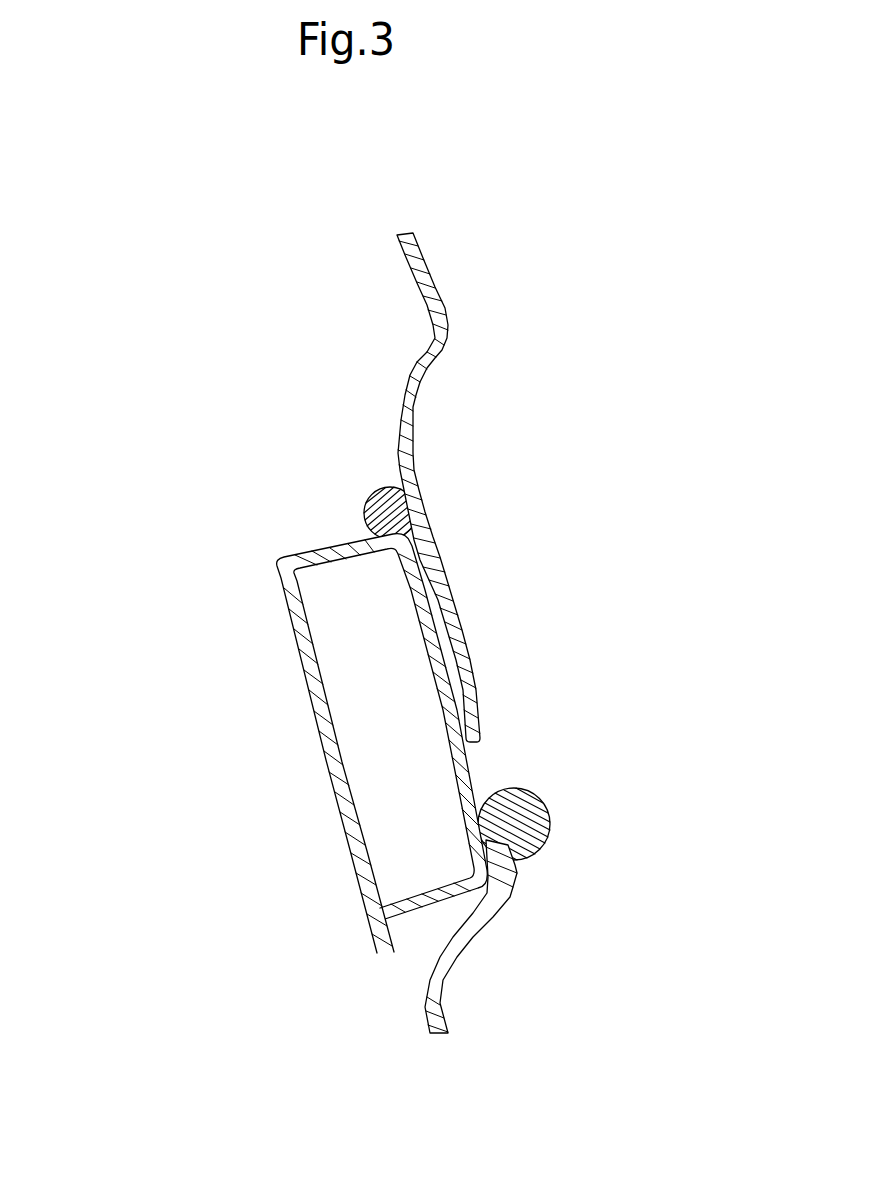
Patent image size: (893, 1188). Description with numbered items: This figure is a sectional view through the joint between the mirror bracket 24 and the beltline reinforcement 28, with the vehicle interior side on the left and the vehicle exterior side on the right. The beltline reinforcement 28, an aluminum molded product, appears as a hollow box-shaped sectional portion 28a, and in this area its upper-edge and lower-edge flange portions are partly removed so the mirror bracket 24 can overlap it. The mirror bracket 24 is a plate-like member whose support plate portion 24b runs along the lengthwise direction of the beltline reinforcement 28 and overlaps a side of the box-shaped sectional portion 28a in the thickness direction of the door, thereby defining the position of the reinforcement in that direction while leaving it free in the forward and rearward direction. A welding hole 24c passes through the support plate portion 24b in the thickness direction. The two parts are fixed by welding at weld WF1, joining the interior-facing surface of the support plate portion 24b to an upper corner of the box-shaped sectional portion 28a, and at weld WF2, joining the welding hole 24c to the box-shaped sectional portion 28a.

The mirror bracket 24 is at (480, 633).
The support plate portion 24b is at (465, 641).
The welding hole 24c is at (470, 746).
The beltline reinforcement 28 is at (362, 749).
The box-shaped sectional portion 28a is at (318, 731).
The weld WF1 is at (366, 504).
The weld WF2 is at (549, 823).